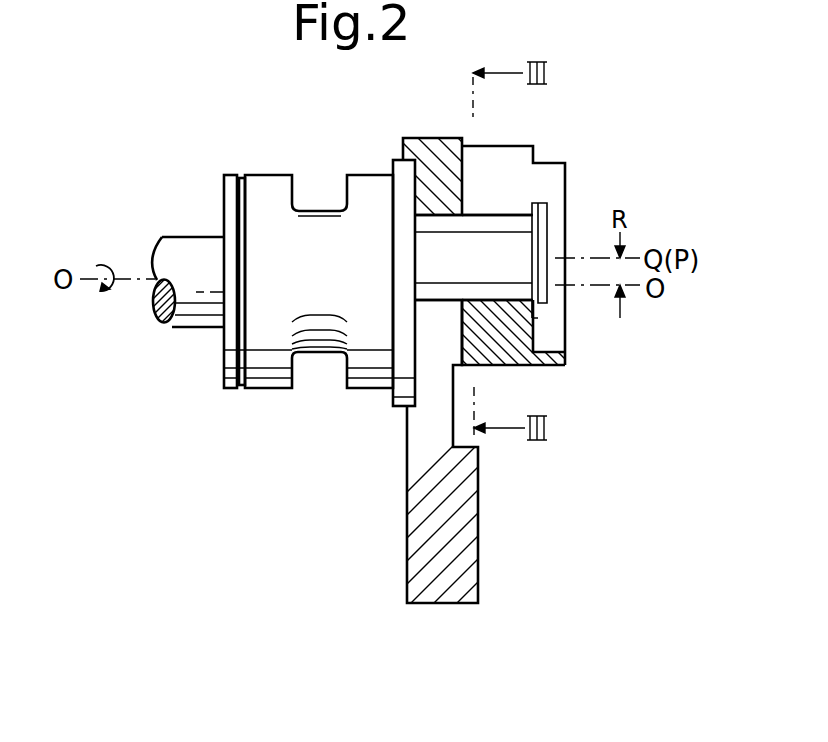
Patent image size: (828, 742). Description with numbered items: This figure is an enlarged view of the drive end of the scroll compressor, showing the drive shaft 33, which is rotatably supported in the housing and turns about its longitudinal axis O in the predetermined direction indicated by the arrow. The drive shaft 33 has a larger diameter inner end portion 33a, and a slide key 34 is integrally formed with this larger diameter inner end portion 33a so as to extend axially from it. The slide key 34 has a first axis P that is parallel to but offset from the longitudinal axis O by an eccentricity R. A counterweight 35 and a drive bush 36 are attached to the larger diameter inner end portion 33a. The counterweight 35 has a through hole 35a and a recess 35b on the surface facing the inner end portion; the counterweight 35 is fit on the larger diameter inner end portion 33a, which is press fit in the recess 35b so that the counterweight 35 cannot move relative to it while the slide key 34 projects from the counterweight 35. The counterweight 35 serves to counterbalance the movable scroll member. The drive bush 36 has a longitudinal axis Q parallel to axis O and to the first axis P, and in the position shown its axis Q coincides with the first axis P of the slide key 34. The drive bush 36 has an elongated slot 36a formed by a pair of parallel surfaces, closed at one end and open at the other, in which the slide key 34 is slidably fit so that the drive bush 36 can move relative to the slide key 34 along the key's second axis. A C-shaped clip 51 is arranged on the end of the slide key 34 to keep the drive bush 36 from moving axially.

The drive shaft 33 is at (190, 252).
The larger diameter inner end portion 33a is at (397, 408).
The recess 35b is at (404, 283).
The slide key 34 is at (510, 268).
The counterweight 35 is at (467, 538).
The through hole 35a is at (441, 215).
The drive bush 36 is at (510, 345).
The elongated slot 36a is at (505, 165).
The C-shaped clip 51 is at (535, 205).